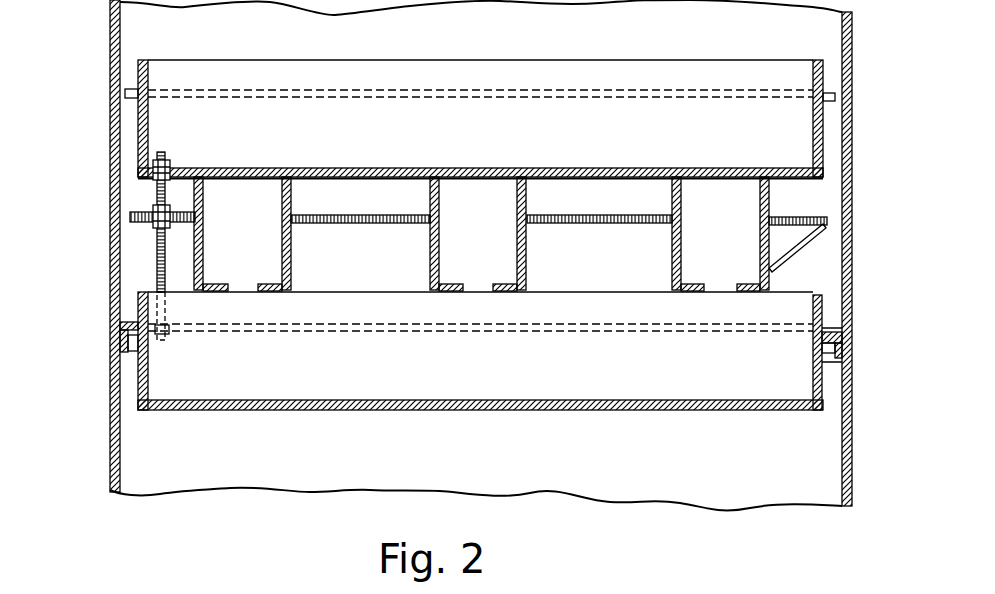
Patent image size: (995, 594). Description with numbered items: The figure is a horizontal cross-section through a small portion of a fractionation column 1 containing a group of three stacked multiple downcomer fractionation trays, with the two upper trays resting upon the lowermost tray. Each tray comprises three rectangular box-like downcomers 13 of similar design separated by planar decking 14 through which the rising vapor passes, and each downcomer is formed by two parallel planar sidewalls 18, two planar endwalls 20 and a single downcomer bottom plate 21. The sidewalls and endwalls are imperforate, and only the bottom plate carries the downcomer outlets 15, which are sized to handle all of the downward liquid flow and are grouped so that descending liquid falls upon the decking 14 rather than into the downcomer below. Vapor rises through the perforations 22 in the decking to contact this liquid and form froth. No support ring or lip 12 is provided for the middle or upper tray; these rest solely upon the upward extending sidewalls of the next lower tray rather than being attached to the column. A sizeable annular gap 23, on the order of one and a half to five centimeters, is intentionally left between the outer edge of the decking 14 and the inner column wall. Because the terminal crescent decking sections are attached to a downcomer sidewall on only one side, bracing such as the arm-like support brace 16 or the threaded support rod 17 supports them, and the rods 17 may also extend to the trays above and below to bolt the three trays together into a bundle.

The furnace apparatus 1 is at (868, 255).
The support ring 12 is at (850, 346).
The downcomers 13 is at (842, 121).
The decking 14 is at (813, 215).
The downcomer outlets 15 is at (393, 169).
The support brace 16 is at (787, 257).
The threaded support rod 17 is at (160, 243).
The sidewalls 18 is at (281, 252).
The endwalls 20 is at (743, 238).
The downcomer bottom plate 21 is at (428, 411).
The perforations 22 is at (659, 214).
The annular gap 23 is at (832, 90).